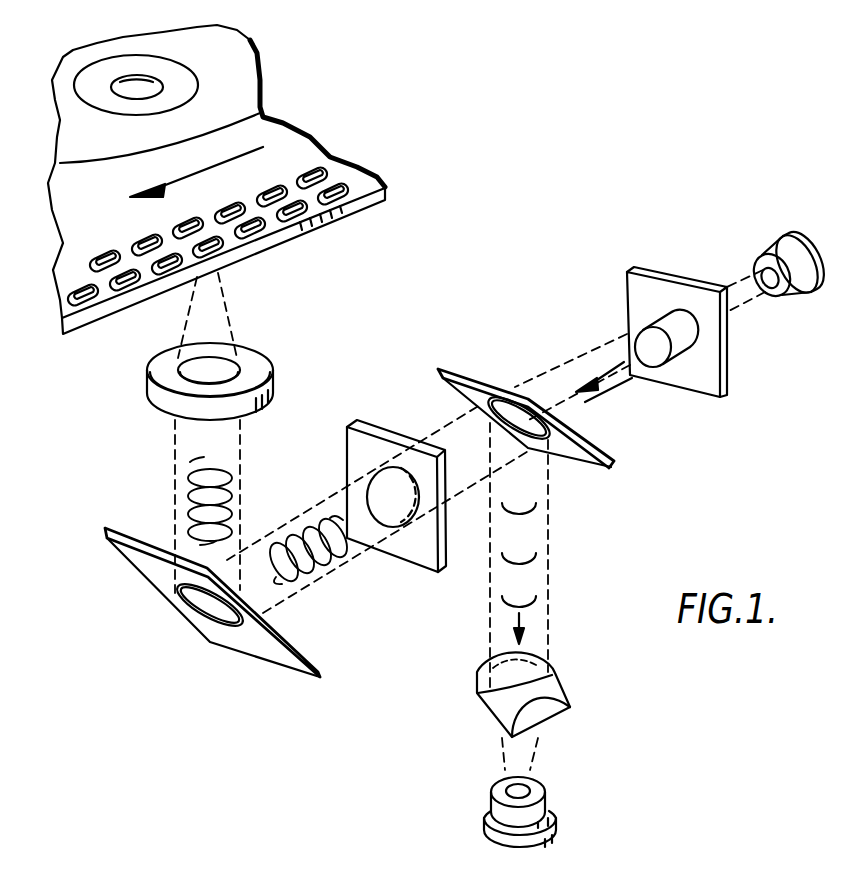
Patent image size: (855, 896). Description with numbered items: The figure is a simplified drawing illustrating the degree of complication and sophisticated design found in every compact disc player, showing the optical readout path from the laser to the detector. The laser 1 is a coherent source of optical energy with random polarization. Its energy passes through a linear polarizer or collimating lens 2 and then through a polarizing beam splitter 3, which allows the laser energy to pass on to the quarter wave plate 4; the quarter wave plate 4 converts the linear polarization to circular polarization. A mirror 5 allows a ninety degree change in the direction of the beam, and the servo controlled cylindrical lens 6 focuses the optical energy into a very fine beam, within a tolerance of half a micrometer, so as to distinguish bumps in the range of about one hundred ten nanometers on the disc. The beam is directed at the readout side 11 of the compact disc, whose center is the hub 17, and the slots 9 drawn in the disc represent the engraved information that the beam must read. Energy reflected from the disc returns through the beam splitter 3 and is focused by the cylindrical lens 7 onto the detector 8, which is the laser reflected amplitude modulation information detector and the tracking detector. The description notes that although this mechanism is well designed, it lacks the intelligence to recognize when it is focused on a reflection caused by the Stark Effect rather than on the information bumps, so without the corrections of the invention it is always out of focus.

The laser 1 is at (765, 254).
The linear polarizer or collimating lens 2 is at (647, 343).
The polarizing beam splitter 3 is at (573, 460).
The quarter wave plate 4 is at (413, 547).
The mirror 5 is at (135, 556).
The servo controlled cylindrical lens 6 is at (203, 373).
The cylindrical lens 7 is at (570, 705).
The laser reflected amplitude modulation information detector and tracking detector 8 is at (545, 797).
The slot apertures 9 is at (258, 242).
The readout side of the disc 11 is at (348, 212).
The hub or center of the disc 17 is at (150, 80).